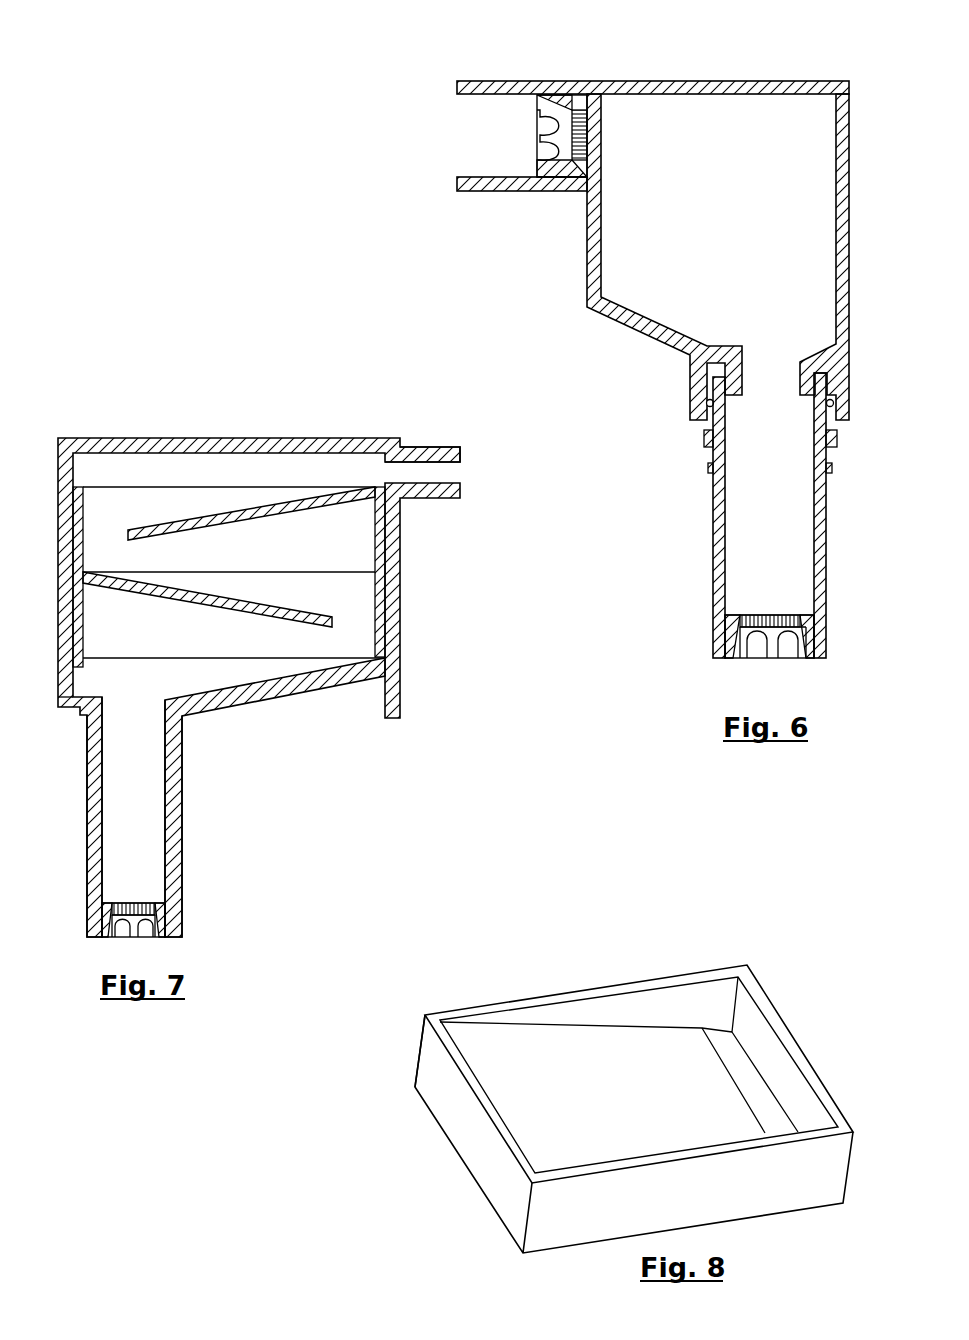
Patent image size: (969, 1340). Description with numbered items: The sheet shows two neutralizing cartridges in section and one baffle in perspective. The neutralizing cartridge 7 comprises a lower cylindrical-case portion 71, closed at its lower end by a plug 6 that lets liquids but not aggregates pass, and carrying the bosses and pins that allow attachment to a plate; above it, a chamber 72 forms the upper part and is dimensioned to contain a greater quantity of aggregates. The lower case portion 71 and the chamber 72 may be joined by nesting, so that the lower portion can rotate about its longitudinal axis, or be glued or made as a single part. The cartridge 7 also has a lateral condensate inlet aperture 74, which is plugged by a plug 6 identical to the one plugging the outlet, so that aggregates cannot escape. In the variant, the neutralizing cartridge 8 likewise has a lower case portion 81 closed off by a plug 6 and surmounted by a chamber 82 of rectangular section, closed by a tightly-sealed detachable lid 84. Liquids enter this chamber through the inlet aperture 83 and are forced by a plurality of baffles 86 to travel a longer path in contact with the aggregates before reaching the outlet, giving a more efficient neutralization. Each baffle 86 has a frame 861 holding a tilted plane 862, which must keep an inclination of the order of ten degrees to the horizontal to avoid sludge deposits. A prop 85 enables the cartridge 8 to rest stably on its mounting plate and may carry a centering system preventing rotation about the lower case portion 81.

In FIG. 6, the plug 6 is at (565, 110).
In FIG. 7, the plug 6 is at (140, 850).
In FIG. 6, the neutralizing cartridge 7 is at (587, 316).
In FIG. 6, the lower cylindrical-case portion 71 is at (715, 510).
In FIG. 6, the chamber 72 is at (590, 270).
In FIG. 6, the lateral condensate inlet aperture 74 is at (505, 130).
In FIG. 7, the neutralizing cartridge 8 is at (401, 648).
In FIG. 7, the lower case portion 81 is at (182, 795).
In FIG. 7, the chamber 82 is at (390, 578).
In FIG. 7, the inlet aperture 83 is at (420, 462).
In FIG. 7, the detachable lid 84 is at (200, 440).
In FIG. 7, the prop 85 is at (392, 700).
In FIG. 7, the baffle 86 is at (357, 523).
In FIG. 8, the baffle 86 is at (580, 1040).
In FIG. 8, the frame 861 is at (685, 995).
In FIG. 8, the tilted plane 862 is at (518, 1092).